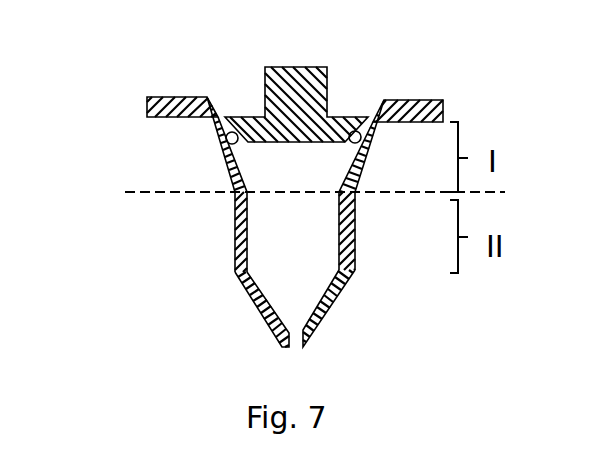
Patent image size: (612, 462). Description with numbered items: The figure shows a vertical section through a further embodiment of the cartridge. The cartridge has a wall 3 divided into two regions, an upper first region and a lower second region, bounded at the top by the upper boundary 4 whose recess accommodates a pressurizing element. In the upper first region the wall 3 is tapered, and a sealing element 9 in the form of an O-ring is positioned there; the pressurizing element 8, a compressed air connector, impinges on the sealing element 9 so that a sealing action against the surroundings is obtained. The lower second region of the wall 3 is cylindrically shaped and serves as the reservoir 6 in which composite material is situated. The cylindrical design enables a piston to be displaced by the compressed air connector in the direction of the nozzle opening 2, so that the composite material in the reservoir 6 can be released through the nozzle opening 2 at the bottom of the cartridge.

The nozzle opening 2 is at (293, 347).
The wall 3 is at (240, 213).
The upper boundary 4 is at (148, 98).
The reservoir 6 is at (260, 247).
The pressurizing element 8 is at (265, 80).
The sealing element 9 is at (227, 134).